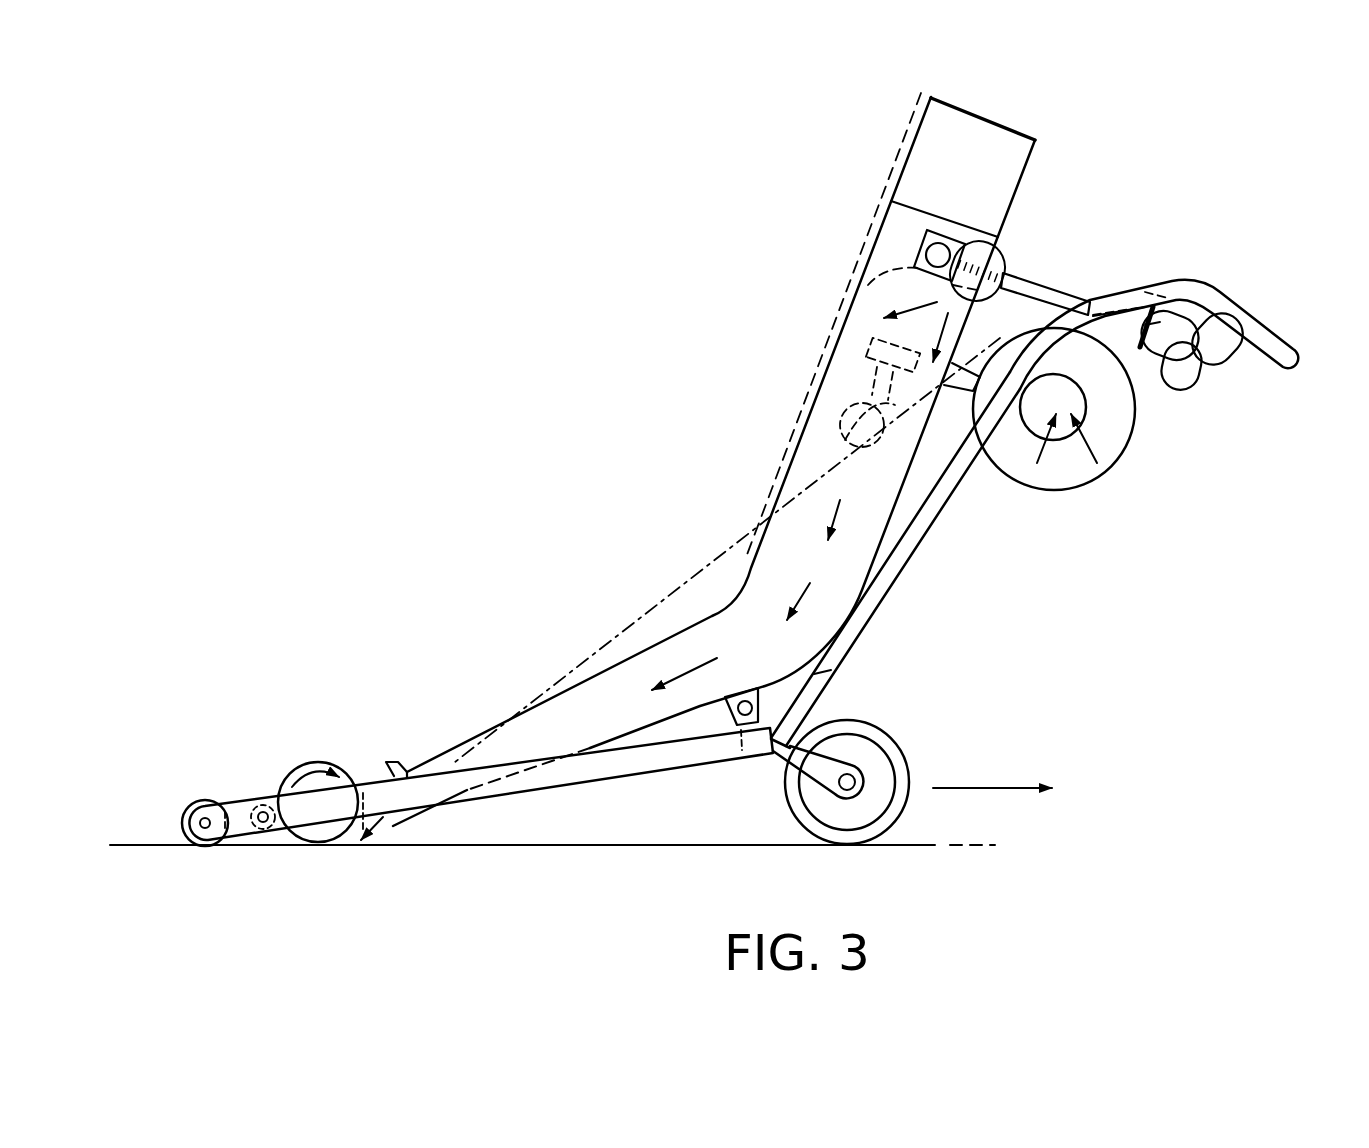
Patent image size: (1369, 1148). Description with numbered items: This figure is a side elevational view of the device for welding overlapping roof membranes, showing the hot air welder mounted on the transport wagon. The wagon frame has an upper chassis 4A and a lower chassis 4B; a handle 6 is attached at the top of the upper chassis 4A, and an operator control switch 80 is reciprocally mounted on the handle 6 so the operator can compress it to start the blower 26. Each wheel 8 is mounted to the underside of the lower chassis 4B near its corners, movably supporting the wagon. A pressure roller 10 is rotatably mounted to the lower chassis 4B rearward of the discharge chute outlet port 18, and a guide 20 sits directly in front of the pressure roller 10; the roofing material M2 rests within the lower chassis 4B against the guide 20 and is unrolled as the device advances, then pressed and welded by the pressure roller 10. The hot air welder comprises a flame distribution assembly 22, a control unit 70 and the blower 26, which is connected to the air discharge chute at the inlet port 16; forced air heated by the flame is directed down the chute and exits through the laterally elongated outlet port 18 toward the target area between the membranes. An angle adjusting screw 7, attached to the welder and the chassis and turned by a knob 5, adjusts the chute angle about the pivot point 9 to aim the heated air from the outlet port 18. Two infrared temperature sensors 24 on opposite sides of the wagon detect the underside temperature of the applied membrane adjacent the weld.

The control unit 70 is at (1048, 136).
The angle adjusting screw 7 is at (996, 263).
The infrared temperature sensors 24 is at (1040, 274).
The flame distribution assembly 22 is at (864, 347).
The upper chassis 4A is at (908, 562).
The handle 6 is at (1265, 327).
The knob 5 is at (1161, 372).
The operator control switch 80 is at (1233, 360).
The blower 26 is at (1108, 437).
The inlet port 16 is at (1067, 443).
The pivot point 9 is at (758, 690).
The wheels 8 is at (900, 755).
The lower chassis 4B is at (643, 757).
The outlet port 18 is at (388, 760).
The roof membrane M2 is at (323, 762).
The guide 20 is at (262, 805).
The pressure roller 10 is at (193, 803).